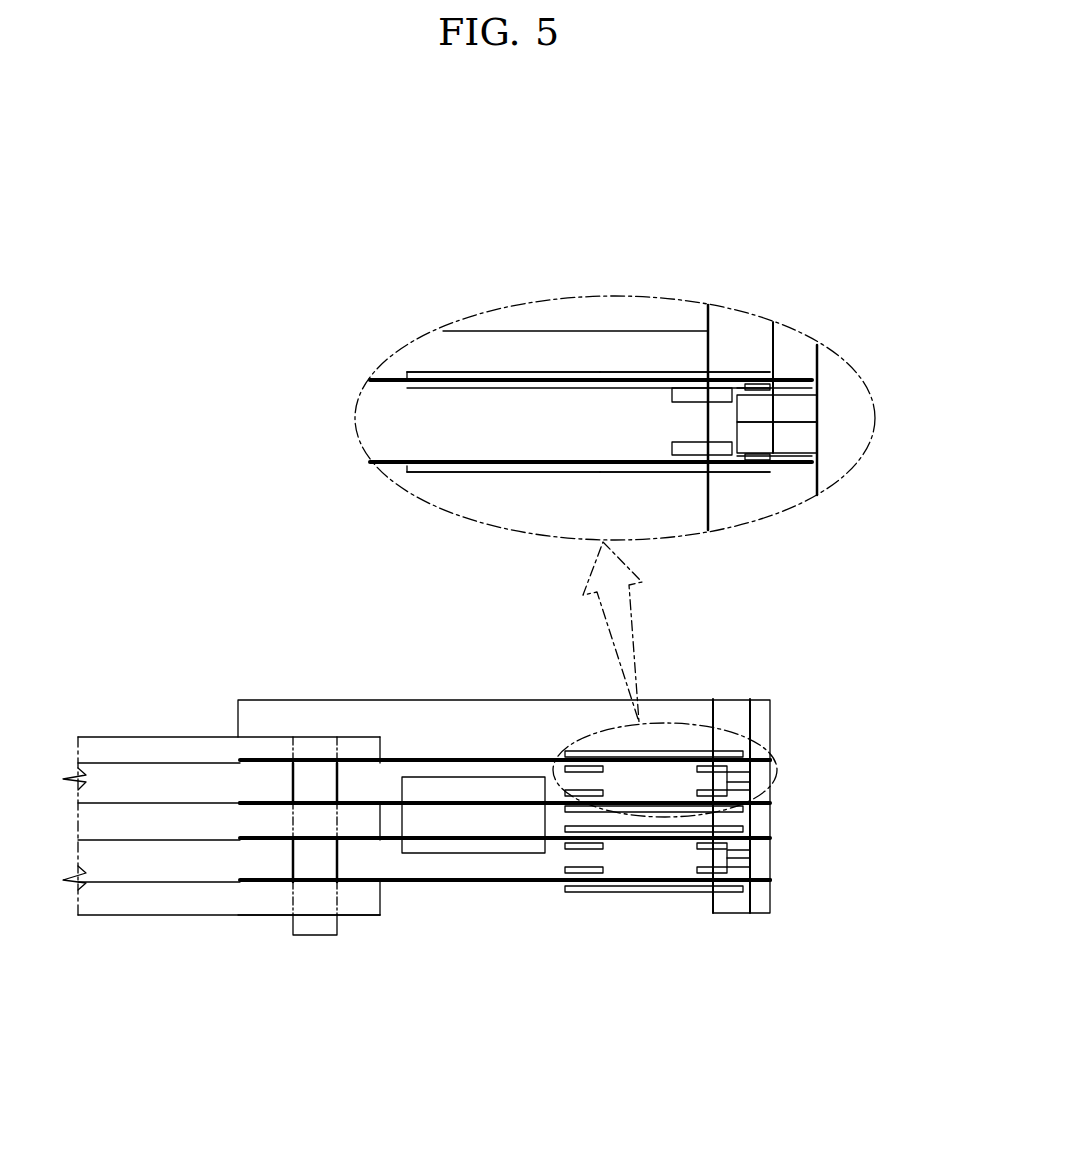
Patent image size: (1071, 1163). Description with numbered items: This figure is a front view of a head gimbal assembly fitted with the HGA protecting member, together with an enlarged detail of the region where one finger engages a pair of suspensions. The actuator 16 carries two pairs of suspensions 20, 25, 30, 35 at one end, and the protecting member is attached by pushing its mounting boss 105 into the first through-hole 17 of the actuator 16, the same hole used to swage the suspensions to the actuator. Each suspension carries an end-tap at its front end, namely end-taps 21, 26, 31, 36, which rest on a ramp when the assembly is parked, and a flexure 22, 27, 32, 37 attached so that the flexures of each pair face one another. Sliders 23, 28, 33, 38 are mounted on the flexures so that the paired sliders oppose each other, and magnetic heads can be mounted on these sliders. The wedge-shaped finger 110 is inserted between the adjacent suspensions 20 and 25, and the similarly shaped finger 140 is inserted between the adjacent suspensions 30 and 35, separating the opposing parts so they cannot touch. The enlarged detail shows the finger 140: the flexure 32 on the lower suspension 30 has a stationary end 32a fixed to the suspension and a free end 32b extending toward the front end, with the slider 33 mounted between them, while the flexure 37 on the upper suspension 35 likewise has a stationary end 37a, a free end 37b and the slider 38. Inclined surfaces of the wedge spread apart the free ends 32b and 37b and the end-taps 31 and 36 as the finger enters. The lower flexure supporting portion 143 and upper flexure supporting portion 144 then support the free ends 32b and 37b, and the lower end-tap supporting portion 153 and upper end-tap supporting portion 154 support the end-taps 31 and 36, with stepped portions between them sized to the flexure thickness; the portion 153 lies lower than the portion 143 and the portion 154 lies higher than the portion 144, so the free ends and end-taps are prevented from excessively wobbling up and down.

The actuator 16 is at (155, 735).
The first through-hole 17 is at (313, 752).
The suspension 20 is at (365, 885).
The end-tap 21 is at (758, 887).
The flexure 22 is at (680, 873).
The slider 23 is at (710, 882).
The suspension 25 is at (395, 838).
The end-tap 26 is at (772, 837).
The flexure 27 is at (640, 842).
The slider 28 is at (697, 847).
The suspension 30 is at (392, 466).
The end-tap 31 is at (792, 466).
The flexure 32 is at (590, 450).
The stationary end 32a is at (468, 456).
The free end 32b is at (743, 456).
The slider 33 is at (697, 450).
The suspension 35 is at (392, 378).
The end-tap 36 is at (792, 378).
The flexure 37 is at (572, 390).
The stationary end 37a is at (468, 385).
The free end 37b is at (748, 388).
The slider 38 is at (693, 393).
The mounting boss 105 is at (317, 937).
The finger 110 is at (777, 862).
The finger 140 is at (783, 778).
The lower flexure supporting portion 143 is at (772, 440).
The upper flexure supporting portion 144 is at (777, 413).
The lower end-tap supporting portion 153 is at (772, 450).
The upper end-tap supporting portion 154 is at (772, 412).